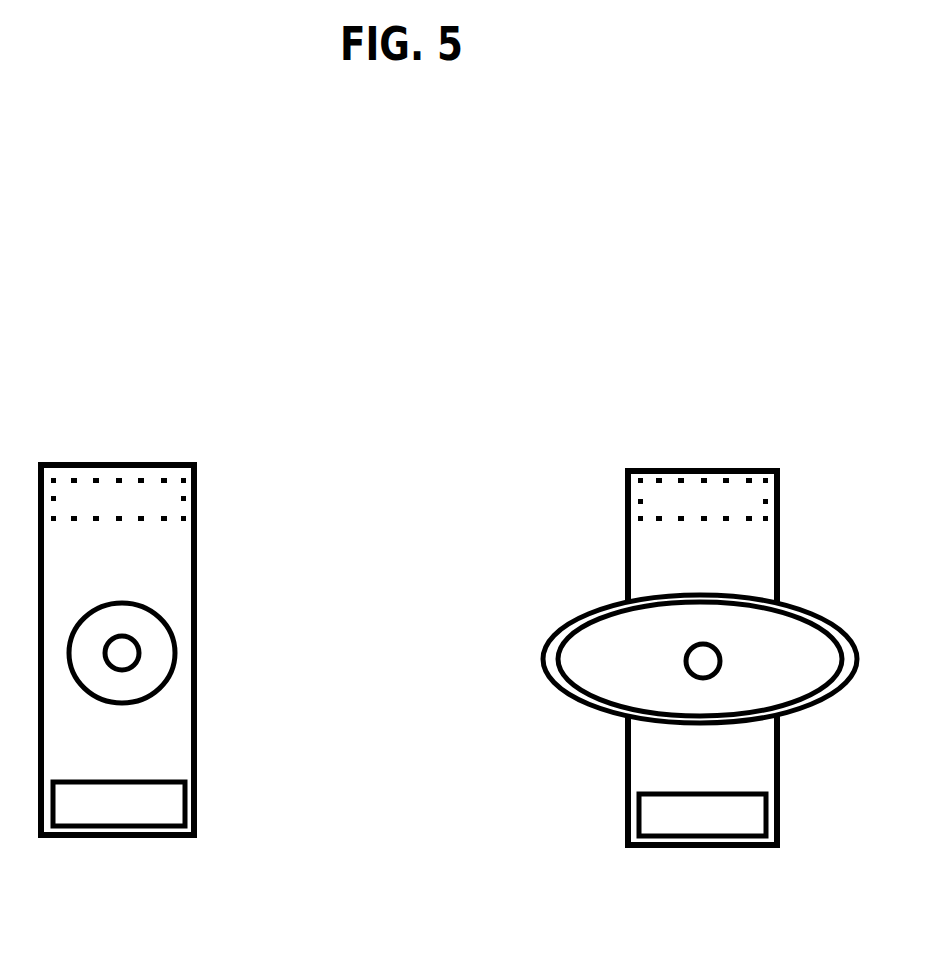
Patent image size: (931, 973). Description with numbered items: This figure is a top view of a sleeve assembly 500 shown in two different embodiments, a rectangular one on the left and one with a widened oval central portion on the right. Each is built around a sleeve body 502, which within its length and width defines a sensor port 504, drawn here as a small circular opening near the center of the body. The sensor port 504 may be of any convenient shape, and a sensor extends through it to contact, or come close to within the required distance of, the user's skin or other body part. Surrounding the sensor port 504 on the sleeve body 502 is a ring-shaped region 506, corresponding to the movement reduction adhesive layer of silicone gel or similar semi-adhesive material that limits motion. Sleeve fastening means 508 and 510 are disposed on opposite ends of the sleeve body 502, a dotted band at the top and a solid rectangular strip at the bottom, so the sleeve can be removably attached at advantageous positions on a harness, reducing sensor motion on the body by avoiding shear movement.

The sleeve assembly 500 is at (403, 266).
The sleeve body 502 is at (667, 566).
The sensor port 504 is at (703, 661).
The ring / outer sensor region 506 is at (663, 693).
The sleeve fastening means 508 is at (655, 817).
The sleeve fastening means 510 is at (663, 502).